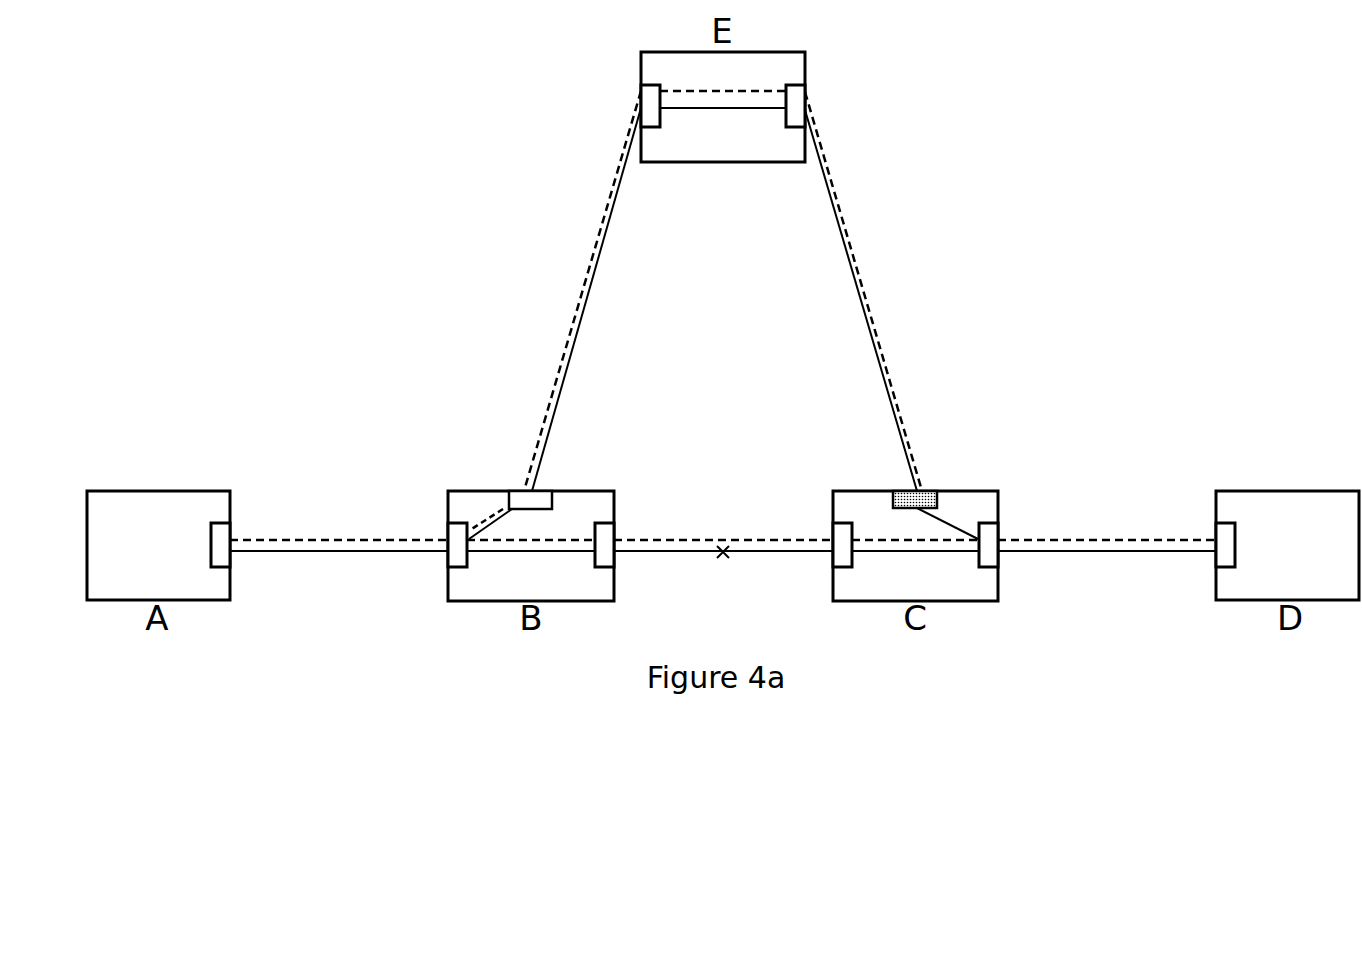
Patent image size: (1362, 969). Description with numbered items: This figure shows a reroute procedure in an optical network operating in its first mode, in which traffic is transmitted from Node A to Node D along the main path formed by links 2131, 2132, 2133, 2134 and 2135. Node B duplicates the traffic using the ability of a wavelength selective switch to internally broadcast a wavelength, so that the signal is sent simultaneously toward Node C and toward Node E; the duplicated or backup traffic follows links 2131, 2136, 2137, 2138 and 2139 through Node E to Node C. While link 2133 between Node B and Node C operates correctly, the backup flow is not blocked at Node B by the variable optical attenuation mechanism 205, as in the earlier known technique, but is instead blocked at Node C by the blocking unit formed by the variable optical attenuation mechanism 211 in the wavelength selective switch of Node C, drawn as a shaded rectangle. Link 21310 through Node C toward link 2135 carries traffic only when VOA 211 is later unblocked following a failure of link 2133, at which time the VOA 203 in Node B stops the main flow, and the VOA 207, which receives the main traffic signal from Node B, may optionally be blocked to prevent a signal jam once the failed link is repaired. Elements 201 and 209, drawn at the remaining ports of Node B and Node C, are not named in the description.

The port of node B 201 is at (446, 558).
The VOA 203 is at (614, 557).
The VOA mechanism 205 is at (536, 503).
The VOA 207 is at (829, 560).
The port of node C 209 is at (990, 558).
The VOA mechanism 211 is at (923, 502).
The link 2131 is at (339, 570).
The link 2132 is at (531, 567).
The link 2133 is at (723, 573).
The link 2134 is at (915, 566).
The link 2135 is at (1107, 570).
The link 2136 is at (525, 524).
The link 2137 is at (596, 291).
The link 2138 is at (723, 120).
The link 2139 is at (858, 291).
The link 21310 is at (963, 515).